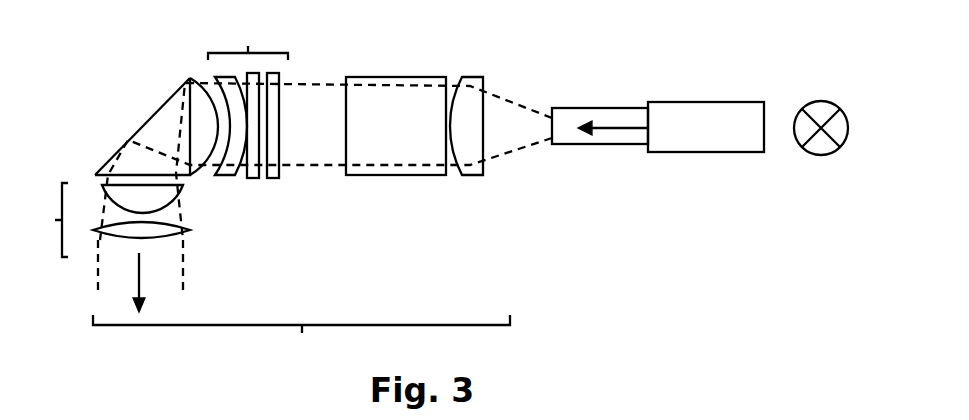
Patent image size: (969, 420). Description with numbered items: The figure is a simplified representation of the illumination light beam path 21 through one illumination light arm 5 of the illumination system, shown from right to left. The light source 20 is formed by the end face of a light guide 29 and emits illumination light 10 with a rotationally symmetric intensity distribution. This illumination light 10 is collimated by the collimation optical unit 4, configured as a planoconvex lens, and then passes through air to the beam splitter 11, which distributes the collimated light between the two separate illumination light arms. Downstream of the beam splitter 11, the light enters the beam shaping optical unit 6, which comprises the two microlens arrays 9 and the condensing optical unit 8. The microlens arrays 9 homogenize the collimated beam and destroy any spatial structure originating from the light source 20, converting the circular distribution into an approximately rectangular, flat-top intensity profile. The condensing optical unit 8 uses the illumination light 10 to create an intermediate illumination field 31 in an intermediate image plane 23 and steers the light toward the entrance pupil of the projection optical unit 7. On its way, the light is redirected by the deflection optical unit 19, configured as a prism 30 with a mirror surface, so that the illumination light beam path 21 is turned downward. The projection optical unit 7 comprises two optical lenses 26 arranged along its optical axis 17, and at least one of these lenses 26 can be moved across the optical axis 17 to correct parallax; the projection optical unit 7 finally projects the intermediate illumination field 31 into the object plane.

The collimation optical unit 4 is at (473, 168).
The illumination light arm 5 is at (301, 341).
The beam shaping optical unit 6 is at (248, 132).
The projection optical unit 7 is at (136, 209).
The condensing optical unit 8 is at (192, 78).
The microlens array 9 is at (250, 178).
The illumination light 10 is at (100, 273).
The beam splitter 11 is at (397, 150).
The optical axis 17 is at (141, 290).
The deflection optical unit 19 is at (113, 126).
The light source 20 is at (546, 124).
The illumination light beam path 21 is at (312, 168).
The intermediate image plane 23 is at (128, 109).
The optical lens 26 is at (100, 186).
The light guide 29 is at (695, 135).
The prism 30 is at (108, 160).
The intermediate illumination field 31 is at (150, 118).